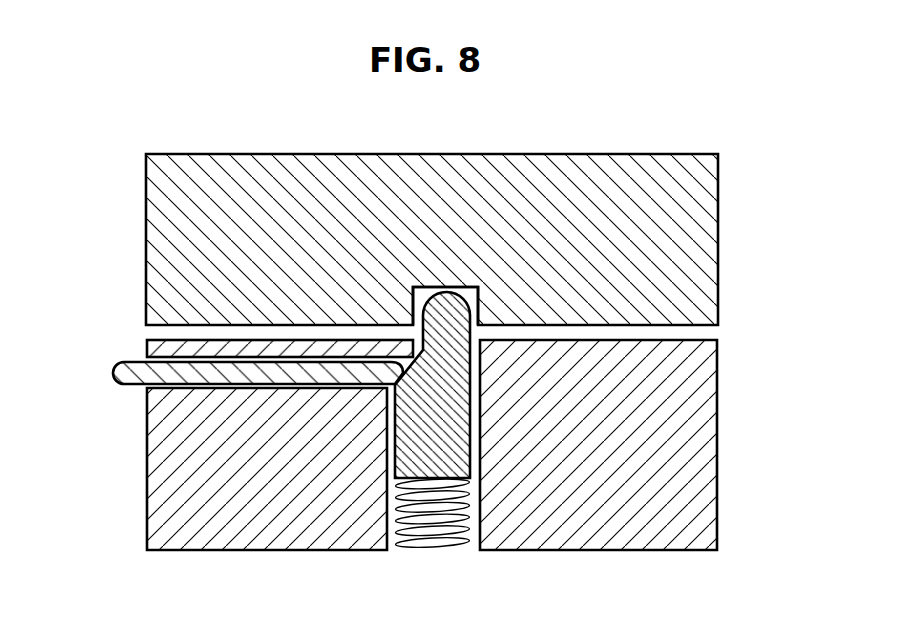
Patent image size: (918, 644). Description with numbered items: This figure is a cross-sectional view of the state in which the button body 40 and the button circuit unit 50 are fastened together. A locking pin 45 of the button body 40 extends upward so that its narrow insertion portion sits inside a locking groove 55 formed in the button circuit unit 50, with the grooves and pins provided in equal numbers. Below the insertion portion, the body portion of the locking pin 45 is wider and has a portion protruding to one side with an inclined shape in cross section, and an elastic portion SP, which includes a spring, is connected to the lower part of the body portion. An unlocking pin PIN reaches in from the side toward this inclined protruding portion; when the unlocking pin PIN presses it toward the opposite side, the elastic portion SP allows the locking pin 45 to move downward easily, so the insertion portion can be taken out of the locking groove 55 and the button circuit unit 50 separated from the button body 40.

The button circuit unit 50 is at (740, 255).
The locking groove 55 is at (466, 289).
The button body 40 is at (744, 439).
The locking pin 45 is at (458, 312).
The unlocking pin PIN is at (118, 372).
The elastic portion SP is at (445, 530).